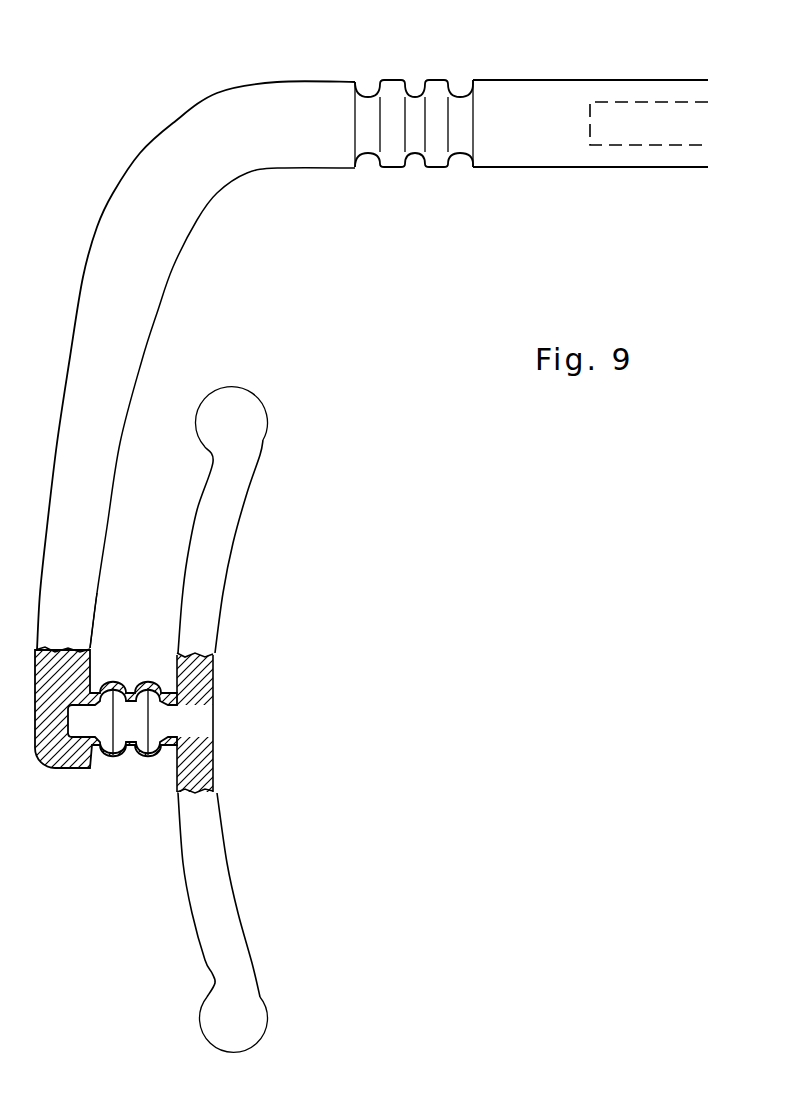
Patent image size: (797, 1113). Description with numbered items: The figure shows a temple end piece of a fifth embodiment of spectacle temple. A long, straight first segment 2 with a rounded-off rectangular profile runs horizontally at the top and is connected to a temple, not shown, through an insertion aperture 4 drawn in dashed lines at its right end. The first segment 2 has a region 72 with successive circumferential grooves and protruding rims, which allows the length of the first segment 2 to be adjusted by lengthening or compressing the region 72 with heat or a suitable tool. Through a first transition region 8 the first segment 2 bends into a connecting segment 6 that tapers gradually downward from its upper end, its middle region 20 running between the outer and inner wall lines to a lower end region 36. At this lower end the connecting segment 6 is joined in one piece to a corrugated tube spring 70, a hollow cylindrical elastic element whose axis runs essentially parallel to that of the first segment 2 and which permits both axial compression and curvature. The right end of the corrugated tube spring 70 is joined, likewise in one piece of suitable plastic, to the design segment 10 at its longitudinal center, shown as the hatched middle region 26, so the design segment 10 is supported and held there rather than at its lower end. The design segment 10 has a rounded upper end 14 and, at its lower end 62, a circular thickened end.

The first segment 2 is at (590, 96).
The insertion aperture 4 is at (638, 113).
The connecting segment 6 is at (196, 337).
The transition region 8 is at (192, 110).
The design segment 10 is at (232, 696).
The end 14 is at (240, 397).
The middle region 20 is at (118, 350).
The middle region 26 is at (203, 678).
The end region 36 is at (80, 623).
The end 62 is at (213, 1018).
The corrugated tube spring 70 is at (106, 704).
The region 72 is at (413, 137).